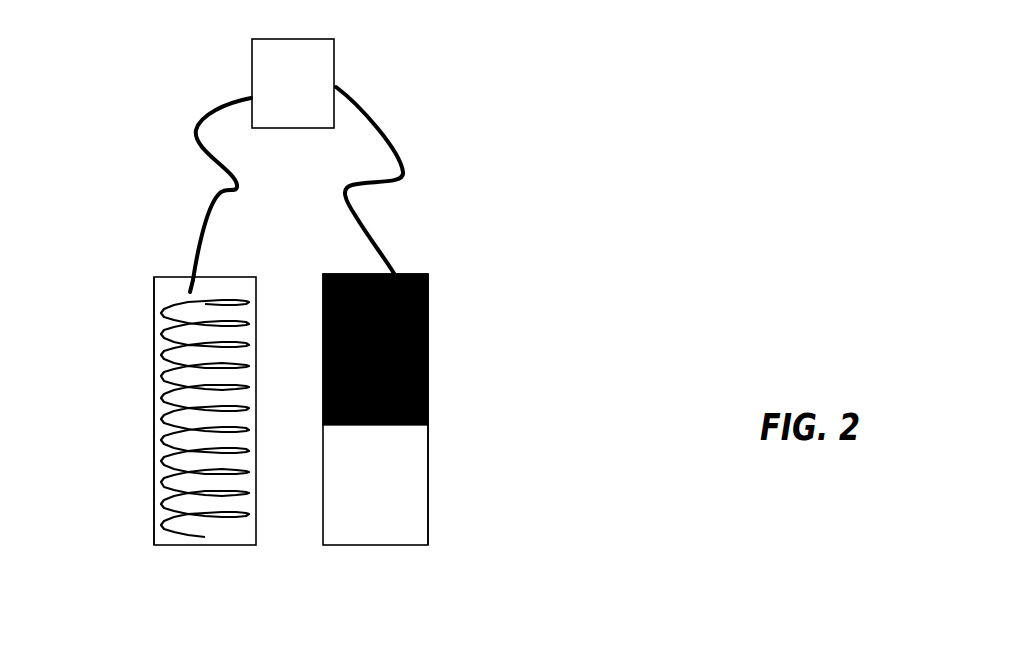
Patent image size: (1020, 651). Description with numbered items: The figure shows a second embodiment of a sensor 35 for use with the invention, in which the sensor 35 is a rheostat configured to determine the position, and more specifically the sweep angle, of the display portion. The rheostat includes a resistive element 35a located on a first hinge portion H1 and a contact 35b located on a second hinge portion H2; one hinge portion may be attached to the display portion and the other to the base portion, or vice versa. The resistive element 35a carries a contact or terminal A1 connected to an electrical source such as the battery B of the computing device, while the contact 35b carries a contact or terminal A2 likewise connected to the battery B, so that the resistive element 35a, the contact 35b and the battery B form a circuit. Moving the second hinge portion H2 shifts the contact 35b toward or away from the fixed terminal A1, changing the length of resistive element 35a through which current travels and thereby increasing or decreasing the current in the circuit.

The sensor 35 is at (487, 265).
The resistive element 35a is at (177, 397).
The contact 35b is at (428, 337).
The battery B is at (293, 83).
The contact or terminal A1 is at (195, 189).
The contact or terminal A2 is at (405, 182).
The first hinge portion H1 is at (153, 510).
The second hinge portion H2 is at (430, 490).